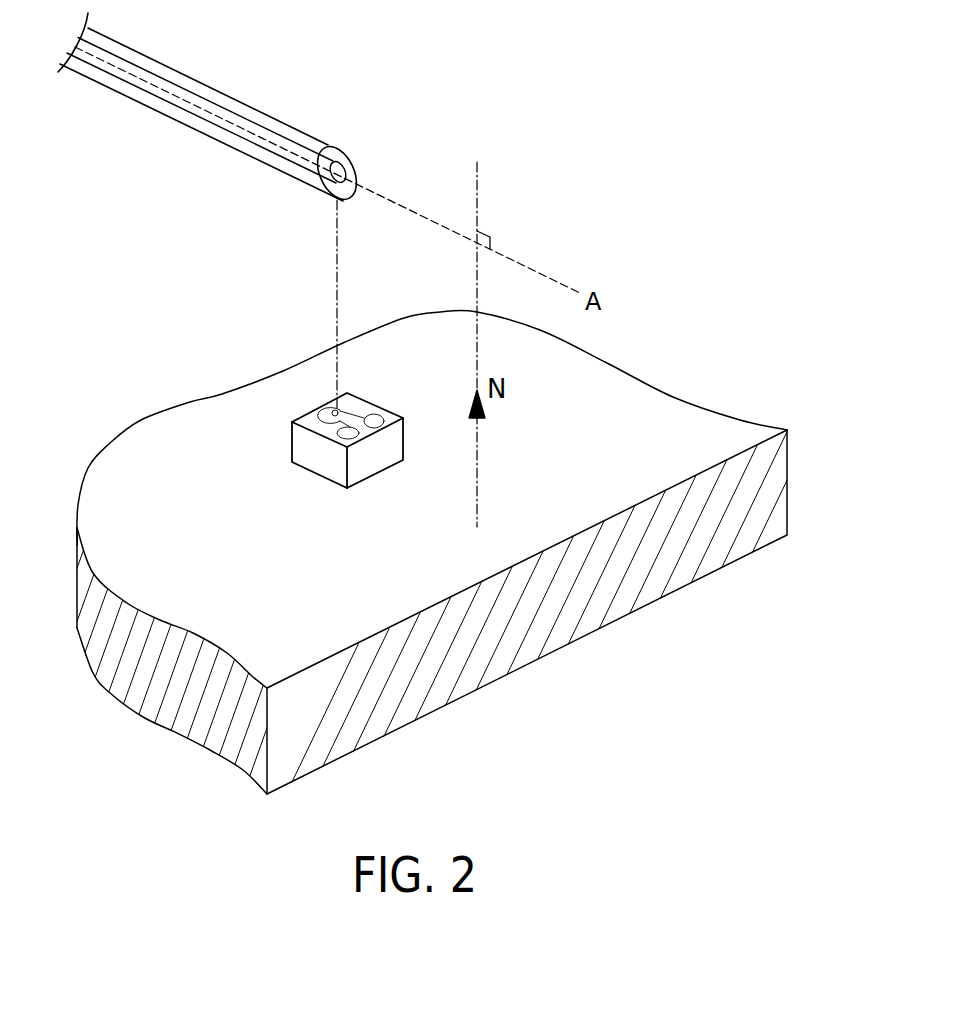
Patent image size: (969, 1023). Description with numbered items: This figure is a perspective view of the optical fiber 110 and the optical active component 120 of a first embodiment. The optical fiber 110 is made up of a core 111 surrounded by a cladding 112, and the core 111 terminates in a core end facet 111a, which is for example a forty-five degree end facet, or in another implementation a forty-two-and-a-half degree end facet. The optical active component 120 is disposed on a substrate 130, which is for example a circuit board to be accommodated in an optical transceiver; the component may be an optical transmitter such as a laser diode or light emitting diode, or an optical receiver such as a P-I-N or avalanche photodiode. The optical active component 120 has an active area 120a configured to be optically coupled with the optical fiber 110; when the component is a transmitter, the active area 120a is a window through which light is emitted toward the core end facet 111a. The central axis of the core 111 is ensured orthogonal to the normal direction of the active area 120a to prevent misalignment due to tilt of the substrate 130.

The optical fiber 110 is at (319, 146).
The core 111 is at (323, 166).
The core end facet 111a is at (348, 175).
The cladding 112 is at (235, 100).
The optical active component 120 is at (309, 414).
The active area 120a is at (335, 411).
The substrate 130 is at (675, 433).